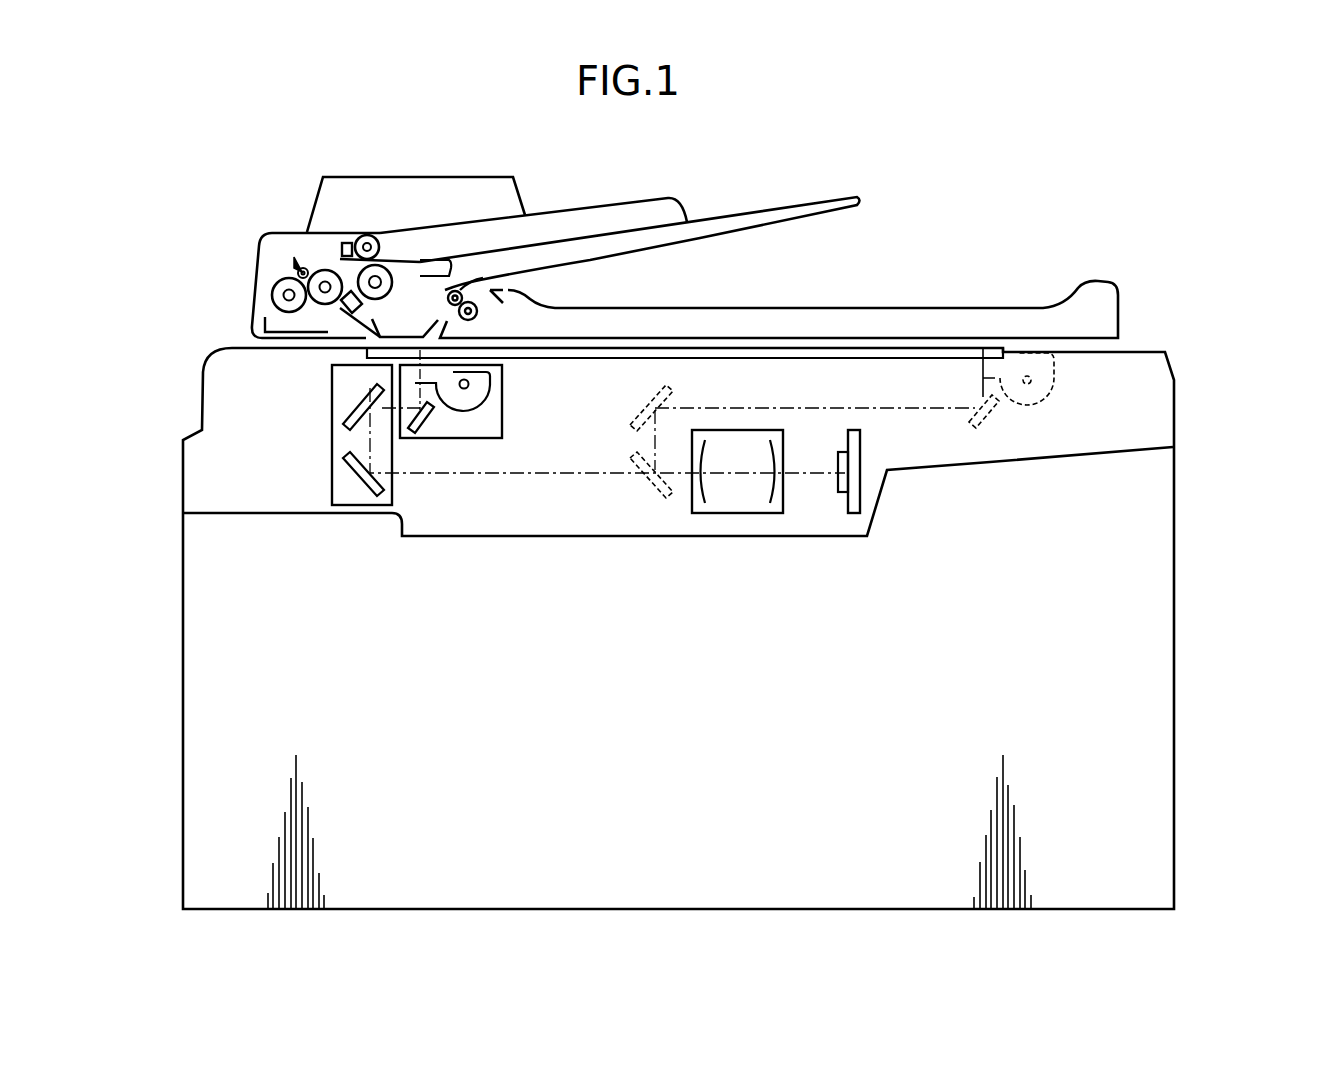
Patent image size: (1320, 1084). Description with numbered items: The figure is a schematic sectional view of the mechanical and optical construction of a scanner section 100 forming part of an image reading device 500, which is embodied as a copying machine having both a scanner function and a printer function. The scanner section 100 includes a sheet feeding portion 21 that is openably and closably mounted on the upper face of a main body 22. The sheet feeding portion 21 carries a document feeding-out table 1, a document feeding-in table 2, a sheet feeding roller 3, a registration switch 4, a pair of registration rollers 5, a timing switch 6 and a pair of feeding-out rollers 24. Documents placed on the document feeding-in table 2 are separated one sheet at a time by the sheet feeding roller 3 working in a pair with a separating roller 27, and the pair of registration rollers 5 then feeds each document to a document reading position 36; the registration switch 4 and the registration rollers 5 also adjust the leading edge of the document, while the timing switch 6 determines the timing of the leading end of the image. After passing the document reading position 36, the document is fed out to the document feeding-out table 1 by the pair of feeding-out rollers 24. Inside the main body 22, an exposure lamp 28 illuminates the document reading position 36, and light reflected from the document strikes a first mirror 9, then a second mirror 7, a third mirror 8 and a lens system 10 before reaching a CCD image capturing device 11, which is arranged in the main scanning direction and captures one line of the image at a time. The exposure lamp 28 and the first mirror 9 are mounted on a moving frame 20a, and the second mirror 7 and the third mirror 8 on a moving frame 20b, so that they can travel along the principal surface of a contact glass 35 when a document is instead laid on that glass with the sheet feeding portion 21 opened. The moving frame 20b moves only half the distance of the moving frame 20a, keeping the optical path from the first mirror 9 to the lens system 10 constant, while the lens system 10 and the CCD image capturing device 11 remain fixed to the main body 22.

The document feeding-out table 1 is at (827, 307).
The document feeding-in table 2 is at (725, 206).
The sheet feeding roller 3 is at (371, 234).
The registration switch 4 is at (341, 249).
The pair of registration rollers 5 is at (322, 268).
The timing switch 6 is at (330, 312).
The second mirror 7 is at (372, 386).
The third mirror 8 is at (357, 487).
The first mirror 9 is at (433, 418).
The lens system 10 is at (710, 513).
The CCD image capturing device 11 is at (863, 480).
The moving frame 20a is at (441, 440).
The moving frame 20b is at (357, 513).
The sheet feeding portion 21 is at (258, 133).
The main body 22 is at (808, 548).
The pair of feeding-out rollers 24 is at (487, 275).
The separating roller 27 is at (400, 290).
The exposure lamp 28 is at (495, 375).
The contact glass 35 is at (815, 348).
The document reading position 36 is at (427, 338).
The scanner section 100 is at (1081, 508).
The image reading device 500 is at (1175, 730).